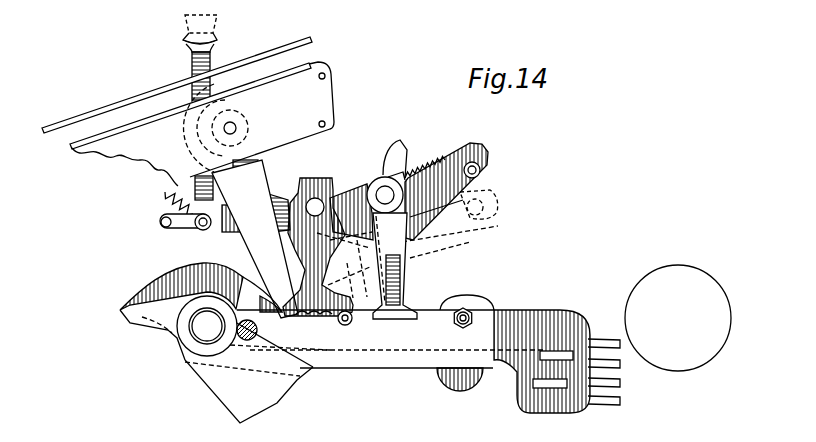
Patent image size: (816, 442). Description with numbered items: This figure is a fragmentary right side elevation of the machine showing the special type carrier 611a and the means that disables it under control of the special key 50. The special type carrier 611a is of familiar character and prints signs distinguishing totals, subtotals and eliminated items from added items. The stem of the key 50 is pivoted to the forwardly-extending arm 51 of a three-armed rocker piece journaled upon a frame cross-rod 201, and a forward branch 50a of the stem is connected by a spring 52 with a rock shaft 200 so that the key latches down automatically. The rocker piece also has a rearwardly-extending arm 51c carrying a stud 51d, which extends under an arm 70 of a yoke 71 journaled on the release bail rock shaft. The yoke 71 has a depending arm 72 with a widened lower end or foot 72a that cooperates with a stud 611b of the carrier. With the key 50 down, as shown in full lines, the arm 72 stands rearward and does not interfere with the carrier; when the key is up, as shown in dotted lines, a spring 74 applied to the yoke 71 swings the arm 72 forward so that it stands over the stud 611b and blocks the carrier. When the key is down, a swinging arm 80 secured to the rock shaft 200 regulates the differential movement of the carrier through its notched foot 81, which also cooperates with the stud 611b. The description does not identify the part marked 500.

The special key 50 is at (222, 41).
The rock shaft 200 is at (233, 125).
The swinging arm 80 is at (266, 166).
The frame cross-rod 201 is at (317, 205).
The notched foot 81 is at (318, 298).
The cam member 500 is at (372, 186).
The yoke 71 is at (385, 186).
The spring 74 is at (413, 163).
The arm of yoke 70 is at (455, 157).
The stud 51d is at (483, 163).
The rearwardly-extending arm 51c is at (443, 213).
The spring 52 is at (172, 202).
The forward branch 50a is at (166, 226).
The forwardly-extending arm 51 is at (229, 231).
The depending arm 72 is at (403, 277).
The foot 72a is at (398, 322).
The special type carrier 611a is at (520, 310).
The stud of special type carrier 611b is at (342, 326).